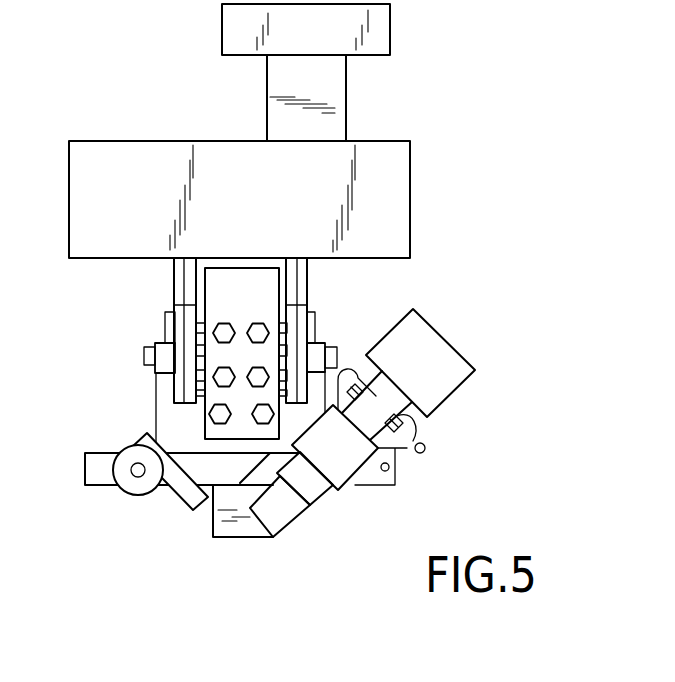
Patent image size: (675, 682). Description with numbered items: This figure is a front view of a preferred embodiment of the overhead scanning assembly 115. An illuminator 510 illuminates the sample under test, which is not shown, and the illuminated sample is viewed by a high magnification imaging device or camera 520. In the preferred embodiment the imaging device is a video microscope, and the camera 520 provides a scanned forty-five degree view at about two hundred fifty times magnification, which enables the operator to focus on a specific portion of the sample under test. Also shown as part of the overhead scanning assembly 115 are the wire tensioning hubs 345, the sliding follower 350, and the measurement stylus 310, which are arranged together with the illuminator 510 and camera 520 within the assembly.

The overhead scanning assembly 115 is at (526, 293).
The wire tensioning hubs 345 is at (182, 283).
The sliding follower 350 is at (156, 368).
The illuminator 510 is at (182, 494).
The camera 520 is at (340, 463).
The measurement stylus 310 is at (240, 537).